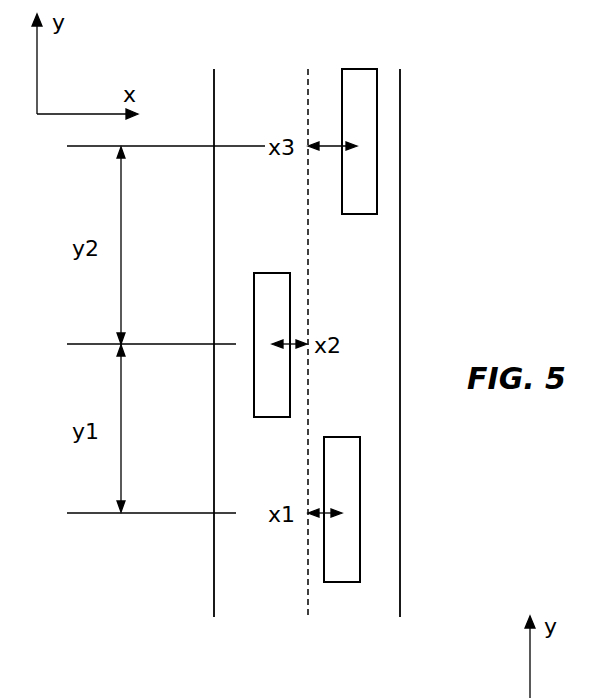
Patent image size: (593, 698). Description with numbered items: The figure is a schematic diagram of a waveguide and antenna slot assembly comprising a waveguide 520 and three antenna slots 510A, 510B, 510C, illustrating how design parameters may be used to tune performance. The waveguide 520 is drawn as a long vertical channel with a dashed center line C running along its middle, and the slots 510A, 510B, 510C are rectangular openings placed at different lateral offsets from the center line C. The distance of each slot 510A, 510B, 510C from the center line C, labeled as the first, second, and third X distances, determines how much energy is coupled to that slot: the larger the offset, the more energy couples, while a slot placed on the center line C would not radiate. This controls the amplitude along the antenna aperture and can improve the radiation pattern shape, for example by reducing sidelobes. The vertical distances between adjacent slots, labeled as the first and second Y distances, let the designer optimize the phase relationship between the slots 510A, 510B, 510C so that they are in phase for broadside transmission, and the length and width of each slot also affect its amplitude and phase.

The antenna slot 510A is at (360, 509).
The antenna slot 510B is at (290, 297).
The antenna slot 510C is at (377, 167).
The waveguide 520 is at (392, 622).
The center line C is at (308, 106).